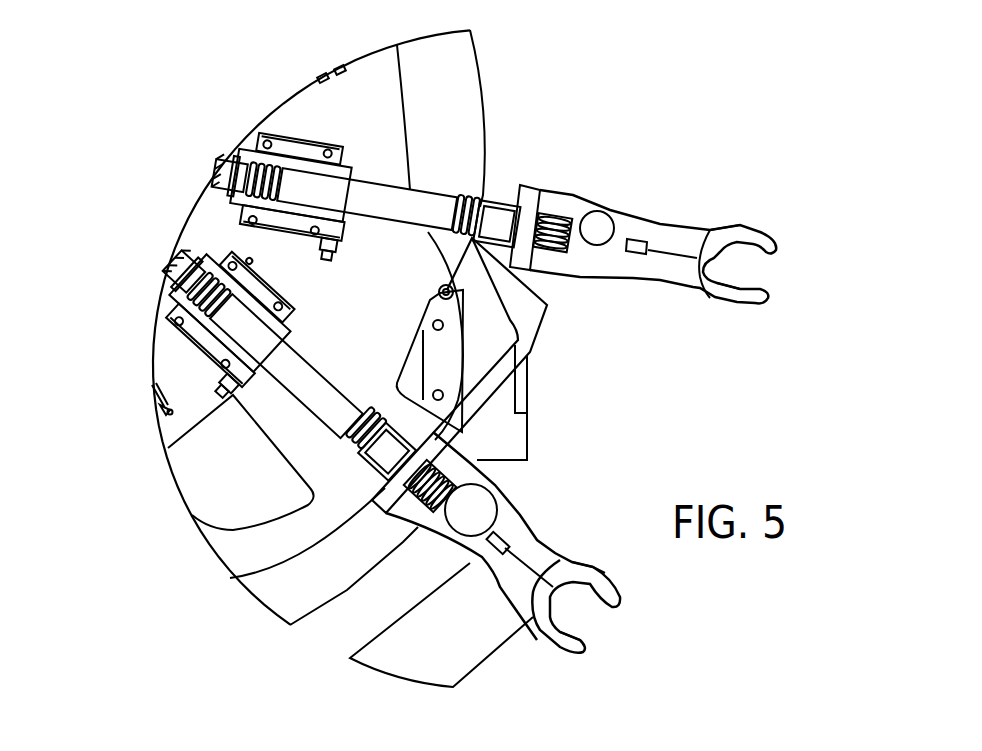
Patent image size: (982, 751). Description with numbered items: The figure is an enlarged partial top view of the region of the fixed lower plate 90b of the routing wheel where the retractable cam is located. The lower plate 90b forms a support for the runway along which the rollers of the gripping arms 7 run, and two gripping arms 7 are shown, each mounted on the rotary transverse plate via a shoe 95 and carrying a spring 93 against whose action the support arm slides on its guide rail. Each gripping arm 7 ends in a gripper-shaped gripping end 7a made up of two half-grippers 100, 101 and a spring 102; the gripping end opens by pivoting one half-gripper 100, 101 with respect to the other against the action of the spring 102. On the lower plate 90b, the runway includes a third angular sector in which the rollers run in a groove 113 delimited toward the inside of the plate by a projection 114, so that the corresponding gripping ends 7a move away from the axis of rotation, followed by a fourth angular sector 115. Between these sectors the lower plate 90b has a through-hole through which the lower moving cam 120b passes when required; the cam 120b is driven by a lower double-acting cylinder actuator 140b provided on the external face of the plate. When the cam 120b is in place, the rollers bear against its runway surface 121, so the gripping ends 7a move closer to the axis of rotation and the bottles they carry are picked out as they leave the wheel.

The fixed lower plate 90b is at (457, 67).
The fourth angular sector 115 is at (440, 113).
The runway surface 121 is at (403, 97).
The gripping arm 7 is at (503, 182).
The gripping end 7a is at (674, 235).
The spring 93 is at (380, 210).
The shoe 95 is at (200, 345).
The spring 102 is at (553, 250).
The lower moving cam 120b is at (490, 357).
The lower double-acting cylinder actuator 140b is at (520, 440).
The half-gripper 100 is at (540, 547).
The half-gripper 101 is at (553, 623).
The projection 114 is at (218, 478).
The groove 113 is at (243, 548).